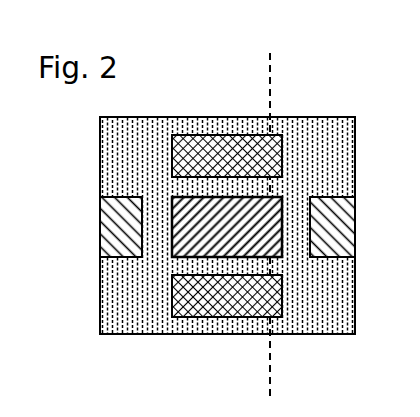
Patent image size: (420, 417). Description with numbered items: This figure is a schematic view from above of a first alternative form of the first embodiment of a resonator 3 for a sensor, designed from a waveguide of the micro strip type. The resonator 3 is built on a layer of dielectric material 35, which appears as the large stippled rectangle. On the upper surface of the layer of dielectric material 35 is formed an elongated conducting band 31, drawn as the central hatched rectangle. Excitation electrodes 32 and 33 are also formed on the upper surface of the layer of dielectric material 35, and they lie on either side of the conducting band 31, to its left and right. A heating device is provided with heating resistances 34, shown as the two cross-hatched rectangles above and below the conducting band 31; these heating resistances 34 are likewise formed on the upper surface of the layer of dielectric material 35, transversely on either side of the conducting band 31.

The resonator 3 is at (225, 112).
The elongated conducting band 31 is at (330, 197).
The excitation electrode 32 is at (100, 225).
The excitation electrode 33 is at (285, 225).
The heating resistances 34 is at (232, 134).
The layer of dielectric material 35 is at (227, 335).